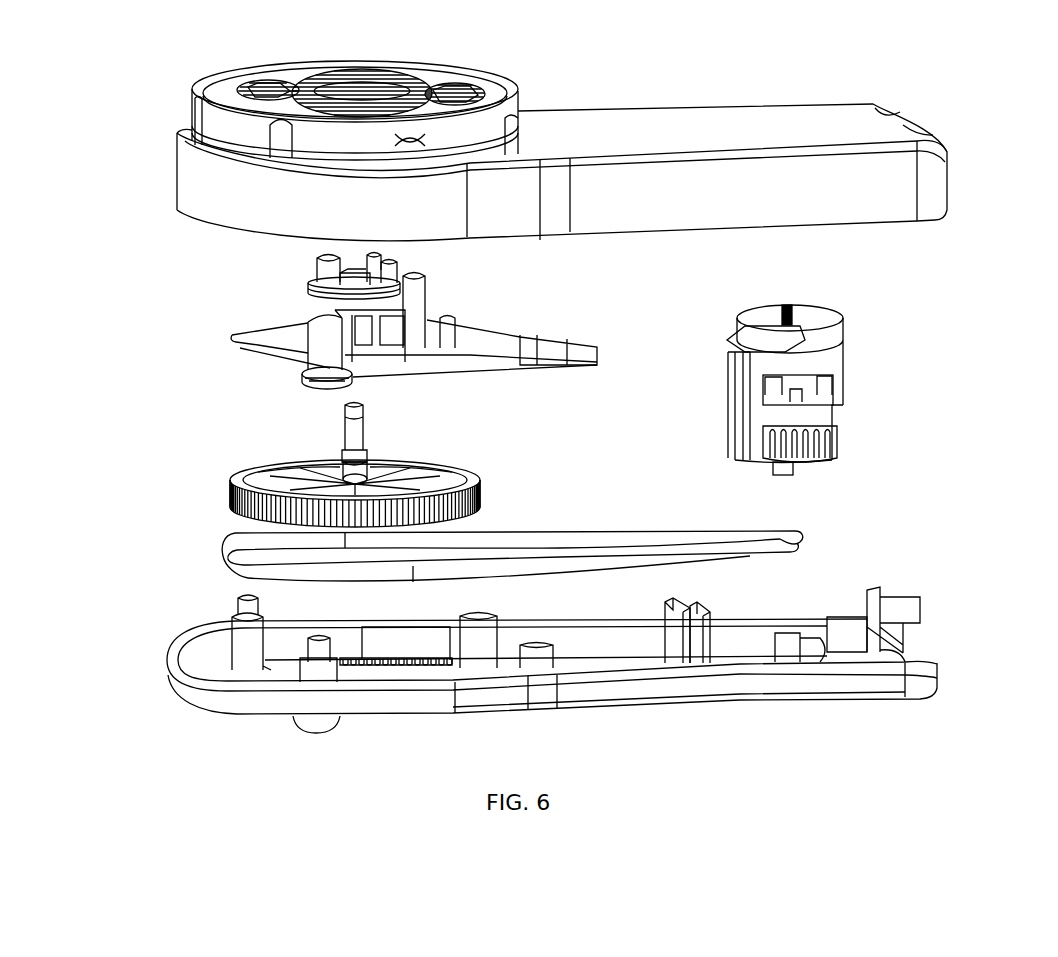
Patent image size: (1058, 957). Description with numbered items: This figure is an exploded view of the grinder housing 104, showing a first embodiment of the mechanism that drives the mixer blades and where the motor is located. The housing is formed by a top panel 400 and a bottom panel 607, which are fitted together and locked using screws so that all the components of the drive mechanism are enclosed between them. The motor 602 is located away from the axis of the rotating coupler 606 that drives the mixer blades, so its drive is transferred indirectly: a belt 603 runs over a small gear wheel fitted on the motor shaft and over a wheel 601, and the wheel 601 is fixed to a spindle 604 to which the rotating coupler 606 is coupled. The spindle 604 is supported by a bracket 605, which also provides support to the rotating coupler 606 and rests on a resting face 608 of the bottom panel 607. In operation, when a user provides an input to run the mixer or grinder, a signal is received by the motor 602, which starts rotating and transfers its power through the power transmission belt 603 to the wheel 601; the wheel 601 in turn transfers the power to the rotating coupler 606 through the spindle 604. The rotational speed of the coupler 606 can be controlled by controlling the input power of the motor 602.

The grinder housing 104 is at (113, 239).
The top panel 400 is at (743, 133).
The wheel 601 is at (230, 503).
The motor 602 is at (833, 403).
The belt 603 is at (803, 540).
The spindle 604 is at (352, 427).
The bracket 605 is at (262, 350).
The rotating coupler 606 is at (313, 278).
The bottom panel 607 is at (200, 676).
The resting face 608 is at (232, 620).